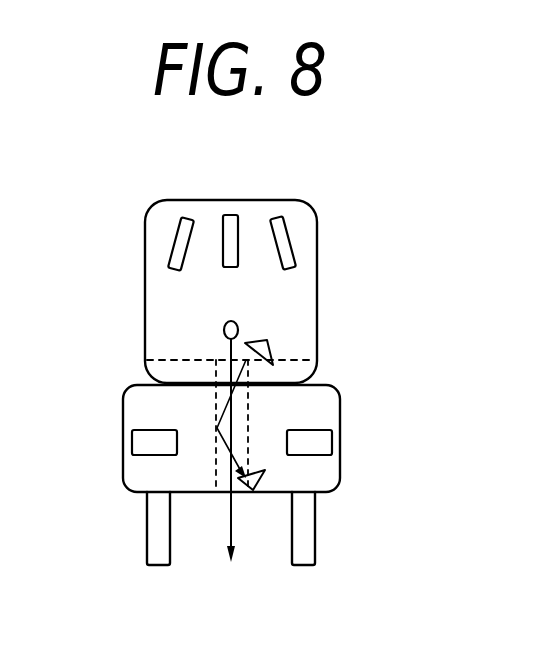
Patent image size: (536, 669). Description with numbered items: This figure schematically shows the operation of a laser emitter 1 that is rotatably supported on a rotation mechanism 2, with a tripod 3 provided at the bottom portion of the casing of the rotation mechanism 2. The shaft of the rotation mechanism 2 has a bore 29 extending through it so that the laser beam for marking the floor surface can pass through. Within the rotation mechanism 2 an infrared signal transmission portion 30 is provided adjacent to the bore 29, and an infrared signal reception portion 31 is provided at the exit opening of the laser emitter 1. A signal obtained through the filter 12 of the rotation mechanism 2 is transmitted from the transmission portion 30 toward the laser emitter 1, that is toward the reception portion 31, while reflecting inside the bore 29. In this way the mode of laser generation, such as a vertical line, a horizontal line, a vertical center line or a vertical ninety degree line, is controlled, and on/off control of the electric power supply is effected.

The laser emitter 1 is at (268, 254).
The rotation mechanism 2 is at (120, 380).
The tripod 3 is at (326, 549).
The filters 12 is at (140, 437).
The bore 29 is at (216, 457).
The infrared signal transmission portion 30 is at (265, 471).
The infrared signal reception portion 31 is at (273, 352).